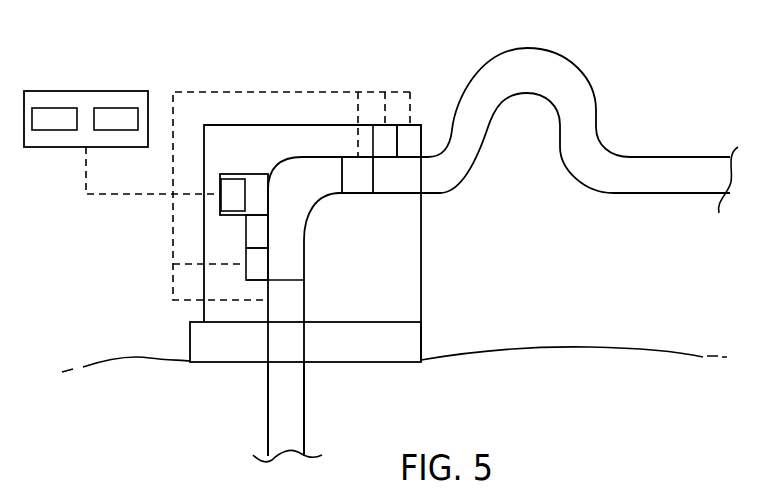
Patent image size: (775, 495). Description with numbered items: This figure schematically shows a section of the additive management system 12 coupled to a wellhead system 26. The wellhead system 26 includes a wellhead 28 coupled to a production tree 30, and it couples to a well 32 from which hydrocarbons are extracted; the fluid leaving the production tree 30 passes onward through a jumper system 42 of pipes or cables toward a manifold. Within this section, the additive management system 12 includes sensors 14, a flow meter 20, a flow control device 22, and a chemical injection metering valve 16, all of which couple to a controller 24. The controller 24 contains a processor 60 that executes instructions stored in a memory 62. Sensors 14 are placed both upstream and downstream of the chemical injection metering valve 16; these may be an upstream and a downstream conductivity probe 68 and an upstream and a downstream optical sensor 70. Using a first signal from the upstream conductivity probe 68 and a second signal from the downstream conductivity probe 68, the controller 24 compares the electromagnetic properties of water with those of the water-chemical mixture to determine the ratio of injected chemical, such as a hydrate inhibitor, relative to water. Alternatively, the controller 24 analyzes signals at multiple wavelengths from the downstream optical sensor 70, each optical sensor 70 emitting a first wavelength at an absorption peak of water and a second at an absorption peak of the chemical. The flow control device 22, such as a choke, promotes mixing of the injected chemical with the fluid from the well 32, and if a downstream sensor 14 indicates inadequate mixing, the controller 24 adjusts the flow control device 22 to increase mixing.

The additive management system 12 is at (212, 90).
The sensors 14 is at (274, 170).
The chemical injection metering valve 16 is at (247, 174).
The flow meter 20 is at (220, 204).
The flow control device 22 is at (357, 193).
The controller 24 is at (37, 91).
The wellhead system 26 is at (472, 283).
The wellhead 28 is at (408, 342).
The production tree 30 is at (300, 125).
The well 32 is at (268, 417).
The jumper system 42 is at (631, 157).
The processor 60 is at (53, 108).
The memory 62 is at (113, 108).
The conductivity probe 68 is at (383, 157).
The optical sensor 70 is at (421, 126).